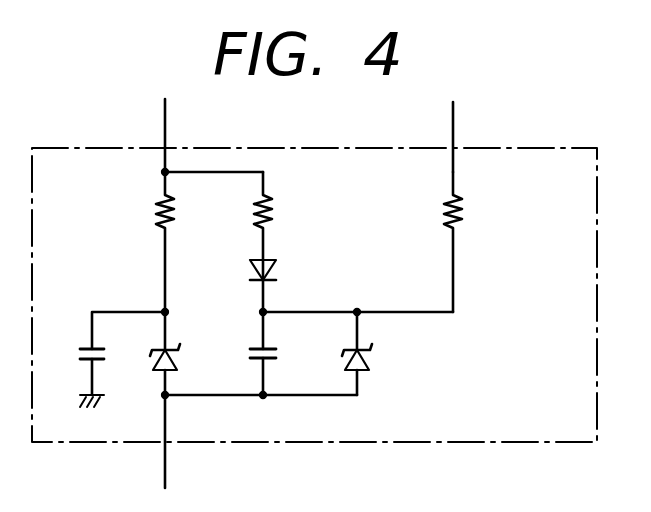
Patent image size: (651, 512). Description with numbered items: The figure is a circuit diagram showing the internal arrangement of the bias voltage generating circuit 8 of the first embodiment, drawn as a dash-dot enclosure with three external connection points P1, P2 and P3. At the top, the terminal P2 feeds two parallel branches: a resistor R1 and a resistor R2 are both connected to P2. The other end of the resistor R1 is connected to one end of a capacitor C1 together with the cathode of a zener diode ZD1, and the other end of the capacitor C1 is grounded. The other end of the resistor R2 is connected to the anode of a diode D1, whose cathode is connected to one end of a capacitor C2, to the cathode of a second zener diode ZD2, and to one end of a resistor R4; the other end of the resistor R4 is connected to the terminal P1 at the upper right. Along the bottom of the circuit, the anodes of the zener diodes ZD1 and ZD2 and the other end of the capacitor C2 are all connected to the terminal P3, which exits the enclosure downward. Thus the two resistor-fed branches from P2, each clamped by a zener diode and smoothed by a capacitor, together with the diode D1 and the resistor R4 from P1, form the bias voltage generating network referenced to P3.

The bias voltage generating circuit 8 is at (578, 148).
The terminal P1 is at (454, 121).
The terminal P2 is at (166, 121).
The terminal P3 is at (166, 463).
The resistor R1 is at (177, 213).
The resistor R2 is at (275, 213).
The resistor R4 is at (465, 213).
The diode D1 is at (278, 266).
The capacitor C1 is at (82, 350).
The capacitor C2 is at (279, 355).
The zener diode ZD1 is at (178, 348).
The zener diode ZD2 is at (370, 348).